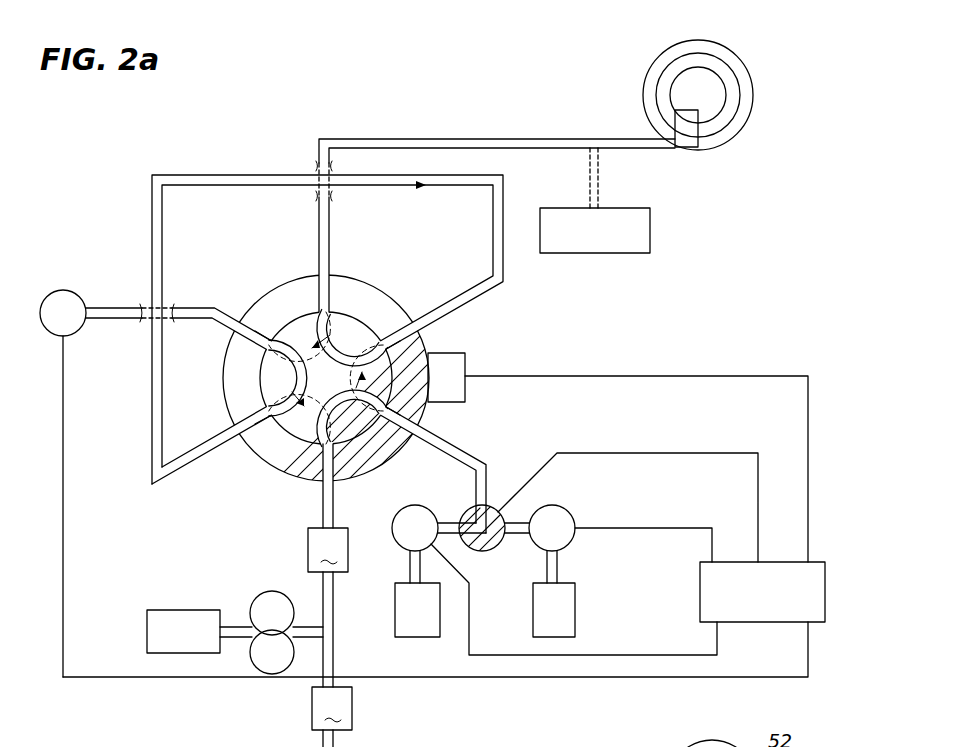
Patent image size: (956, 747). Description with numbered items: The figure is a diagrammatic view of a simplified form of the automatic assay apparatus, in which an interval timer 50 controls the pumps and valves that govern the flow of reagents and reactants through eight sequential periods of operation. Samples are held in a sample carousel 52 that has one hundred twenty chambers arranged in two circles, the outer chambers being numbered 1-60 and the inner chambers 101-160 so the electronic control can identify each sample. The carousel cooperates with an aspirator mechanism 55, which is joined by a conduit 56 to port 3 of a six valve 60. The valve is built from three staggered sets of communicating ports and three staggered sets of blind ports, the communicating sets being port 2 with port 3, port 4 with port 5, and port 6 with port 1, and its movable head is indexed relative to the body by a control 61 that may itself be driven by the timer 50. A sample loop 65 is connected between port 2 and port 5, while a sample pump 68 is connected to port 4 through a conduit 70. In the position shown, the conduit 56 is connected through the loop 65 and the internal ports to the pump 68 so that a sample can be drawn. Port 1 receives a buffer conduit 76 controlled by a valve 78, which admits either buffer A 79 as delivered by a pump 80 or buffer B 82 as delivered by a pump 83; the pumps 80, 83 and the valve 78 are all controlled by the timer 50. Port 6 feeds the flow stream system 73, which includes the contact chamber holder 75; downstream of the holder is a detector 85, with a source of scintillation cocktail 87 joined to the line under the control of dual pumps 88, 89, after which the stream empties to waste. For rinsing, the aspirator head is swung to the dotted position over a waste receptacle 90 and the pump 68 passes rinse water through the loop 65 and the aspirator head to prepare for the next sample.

The six valve 60 is at (397, 296).
The port 1 is at (396, 401).
The port 2 is at (388, 330).
The port 3 is at (313, 254).
The port 4 is at (254, 346).
The port 5 is at (263, 429).
The port 6 is at (335, 485).
The conduit 56 is at (540, 137).
The sample loop 65 is at (406, 187).
The sample carousel 52 is at (636, 82).
The outer circle of chambers 1-60 is at (740, 82).
The inner circle of chambers 101-160 is at (722, 113).
The aspirator mechanism 55 is at (612, 158).
The waste receptacle 90 is at (651, 219).
The sample pump 68 is at (72, 300).
The conduit 70 is at (185, 307).
The control 61 is at (450, 368).
The buffer conduit 76 is at (455, 449).
The valve 78 is at (492, 507).
The pump 80 is at (425, 513).
The pump 83 is at (572, 513).
The buffer A 79 is at (395, 619).
The buffer B 82 is at (577, 614).
The interval timer 50 is at (752, 622).
The flow stream system 73 is at (298, 551).
The contact chamber holder 75 is at (328, 607).
The detector 85 is at (332, 717).
The source of scintillation cocktail 87 is at (198, 610).
The pump 88 is at (282, 595).
The pump 89 is at (251, 662).